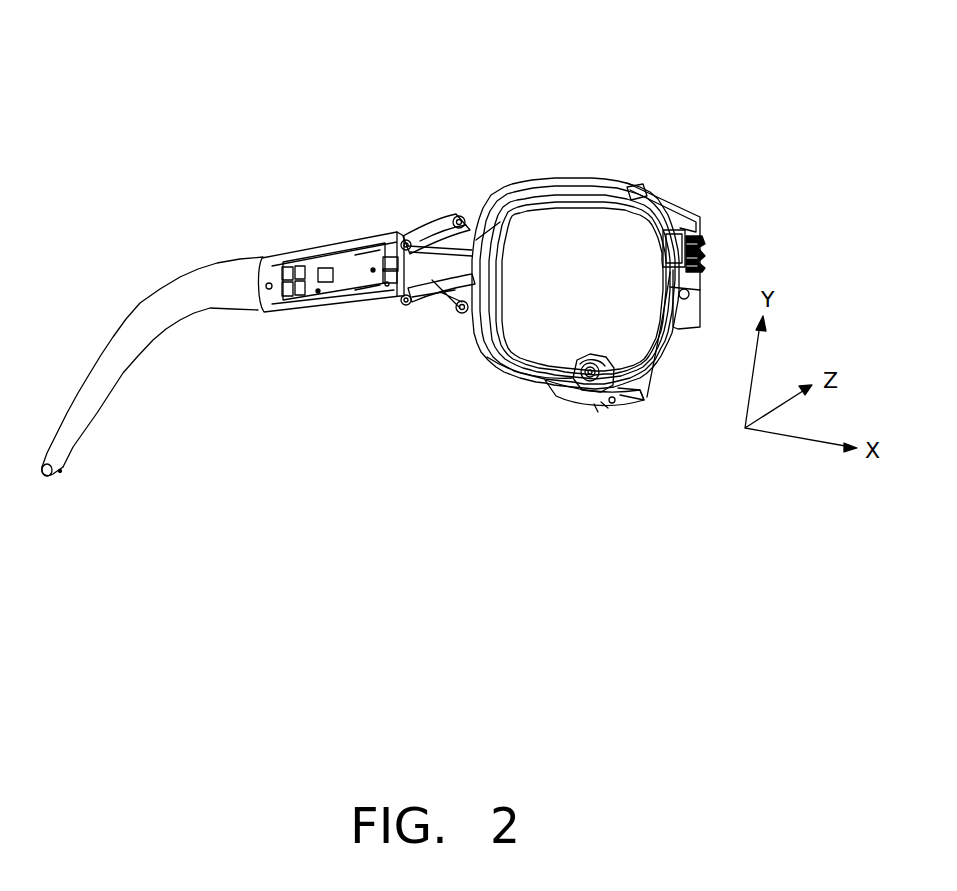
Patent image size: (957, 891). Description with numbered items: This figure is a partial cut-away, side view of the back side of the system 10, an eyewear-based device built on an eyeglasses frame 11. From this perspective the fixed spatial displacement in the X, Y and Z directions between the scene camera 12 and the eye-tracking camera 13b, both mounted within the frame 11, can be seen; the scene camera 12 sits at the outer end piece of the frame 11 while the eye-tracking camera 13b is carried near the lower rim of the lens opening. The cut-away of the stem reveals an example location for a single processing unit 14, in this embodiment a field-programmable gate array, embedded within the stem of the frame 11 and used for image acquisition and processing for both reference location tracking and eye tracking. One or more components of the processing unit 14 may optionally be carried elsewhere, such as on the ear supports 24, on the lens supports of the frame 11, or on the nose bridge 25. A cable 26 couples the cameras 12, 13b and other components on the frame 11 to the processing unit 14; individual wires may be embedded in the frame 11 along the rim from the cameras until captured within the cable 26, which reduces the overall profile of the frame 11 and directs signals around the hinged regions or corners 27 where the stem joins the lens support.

The system 10 is at (547, 127).
The eyeglasses frame 11 is at (514, 177).
The scene camera 12 is at (707, 248).
The eye-tracking camera 13b is at (588, 417).
The processing unit 14 is at (297, 261).
The ear supports 24 is at (183, 270).
The nose bridge 25 is at (696, 208).
The cable 26 is at (445, 298).
The hinged regions or corners 27 is at (468, 248).